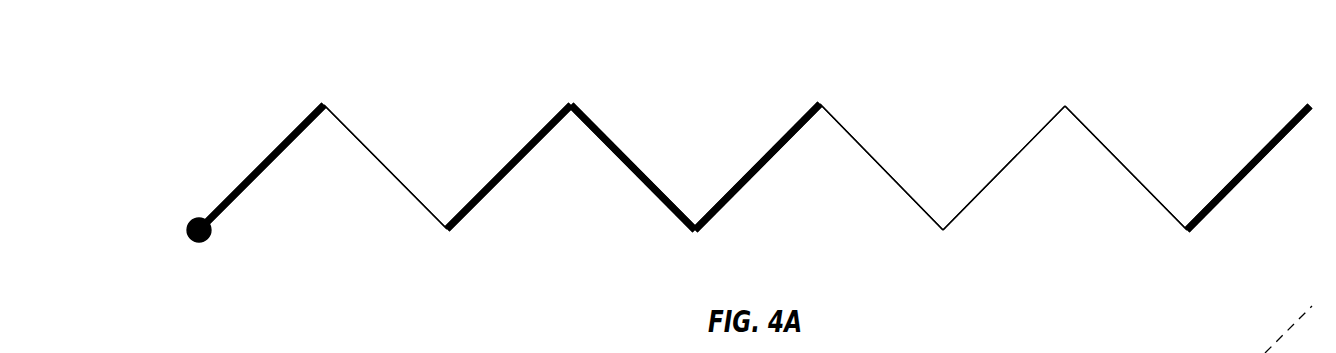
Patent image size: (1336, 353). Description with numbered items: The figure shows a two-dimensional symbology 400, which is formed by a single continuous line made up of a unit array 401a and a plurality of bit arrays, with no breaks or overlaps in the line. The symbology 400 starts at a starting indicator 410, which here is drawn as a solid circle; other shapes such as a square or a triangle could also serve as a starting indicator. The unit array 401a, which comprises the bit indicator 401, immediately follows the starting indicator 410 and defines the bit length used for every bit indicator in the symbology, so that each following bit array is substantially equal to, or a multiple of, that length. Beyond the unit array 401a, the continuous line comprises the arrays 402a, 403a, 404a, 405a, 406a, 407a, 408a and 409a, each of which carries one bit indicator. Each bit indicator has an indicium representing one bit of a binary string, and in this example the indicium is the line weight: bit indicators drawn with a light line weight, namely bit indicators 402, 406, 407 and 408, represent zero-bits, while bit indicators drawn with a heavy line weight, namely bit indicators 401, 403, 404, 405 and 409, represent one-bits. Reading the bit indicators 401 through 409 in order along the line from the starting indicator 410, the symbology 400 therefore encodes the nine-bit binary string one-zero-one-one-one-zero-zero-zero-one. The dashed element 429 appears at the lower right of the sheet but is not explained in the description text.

The two-dimensional symbology 400 is at (201, 90).
The bit indicator 401 is at (262, 160).
The unit array 401a is at (266, 197).
The bit indicator 402 is at (378, 165).
The array 402a is at (448, 104).
The bit indicator 403 is at (509, 160).
The array 403a is at (513, 199).
The bit indicator 404 is at (626, 168).
The array 404a is at (693, 97).
The bit indicator 405 is at (760, 160).
The array 405a is at (761, 199).
The bit indicator 406 is at (874, 165).
The array 406a is at (942, 97).
The bit indicator 407 is at (1010, 160).
The array 407a is at (1011, 203).
The bit indicator 408 is at (1120, 165).
The array 408a is at (1190, 97).
The bit indicator 409 is at (1250, 160).
The array 409a is at (1251, 200).
The starting indicator 410 is at (199, 217).
The dashed continuation segment 429 is at (1258, 350).